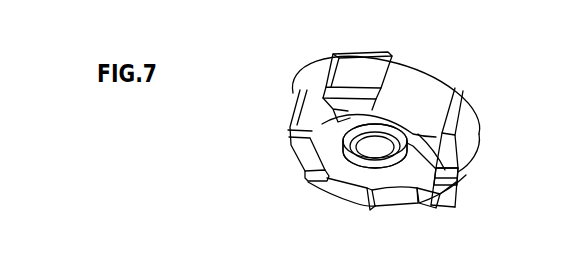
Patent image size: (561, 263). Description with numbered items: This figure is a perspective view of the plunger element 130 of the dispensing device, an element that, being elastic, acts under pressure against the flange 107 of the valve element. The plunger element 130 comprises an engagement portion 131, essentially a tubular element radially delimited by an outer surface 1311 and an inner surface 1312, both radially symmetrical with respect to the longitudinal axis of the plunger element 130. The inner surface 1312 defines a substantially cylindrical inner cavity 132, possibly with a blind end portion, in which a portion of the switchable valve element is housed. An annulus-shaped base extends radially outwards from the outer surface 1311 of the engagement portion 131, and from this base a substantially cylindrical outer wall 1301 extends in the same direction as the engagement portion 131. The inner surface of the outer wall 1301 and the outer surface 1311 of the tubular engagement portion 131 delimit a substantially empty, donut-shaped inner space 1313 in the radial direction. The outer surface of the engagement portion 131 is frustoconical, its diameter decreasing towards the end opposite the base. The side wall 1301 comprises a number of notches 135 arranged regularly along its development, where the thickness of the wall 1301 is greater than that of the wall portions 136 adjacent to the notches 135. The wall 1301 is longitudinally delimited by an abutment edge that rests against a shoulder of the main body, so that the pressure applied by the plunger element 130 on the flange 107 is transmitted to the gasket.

The plunger element 130 is at (292, 73).
The engagement portion 131 is at (312, 141).
The outer surface 1311 is at (329, 181).
The inner surface 1312 is at (322, 136).
The inner space 1313 is at (458, 170).
The outer wall 1301 is at (452, 201).
The inner cavity 132 is at (420, 188).
The notches 135 is at (401, 207).
The wall portions 136 is at (404, 89).
The flange 107 is at (343, 259).